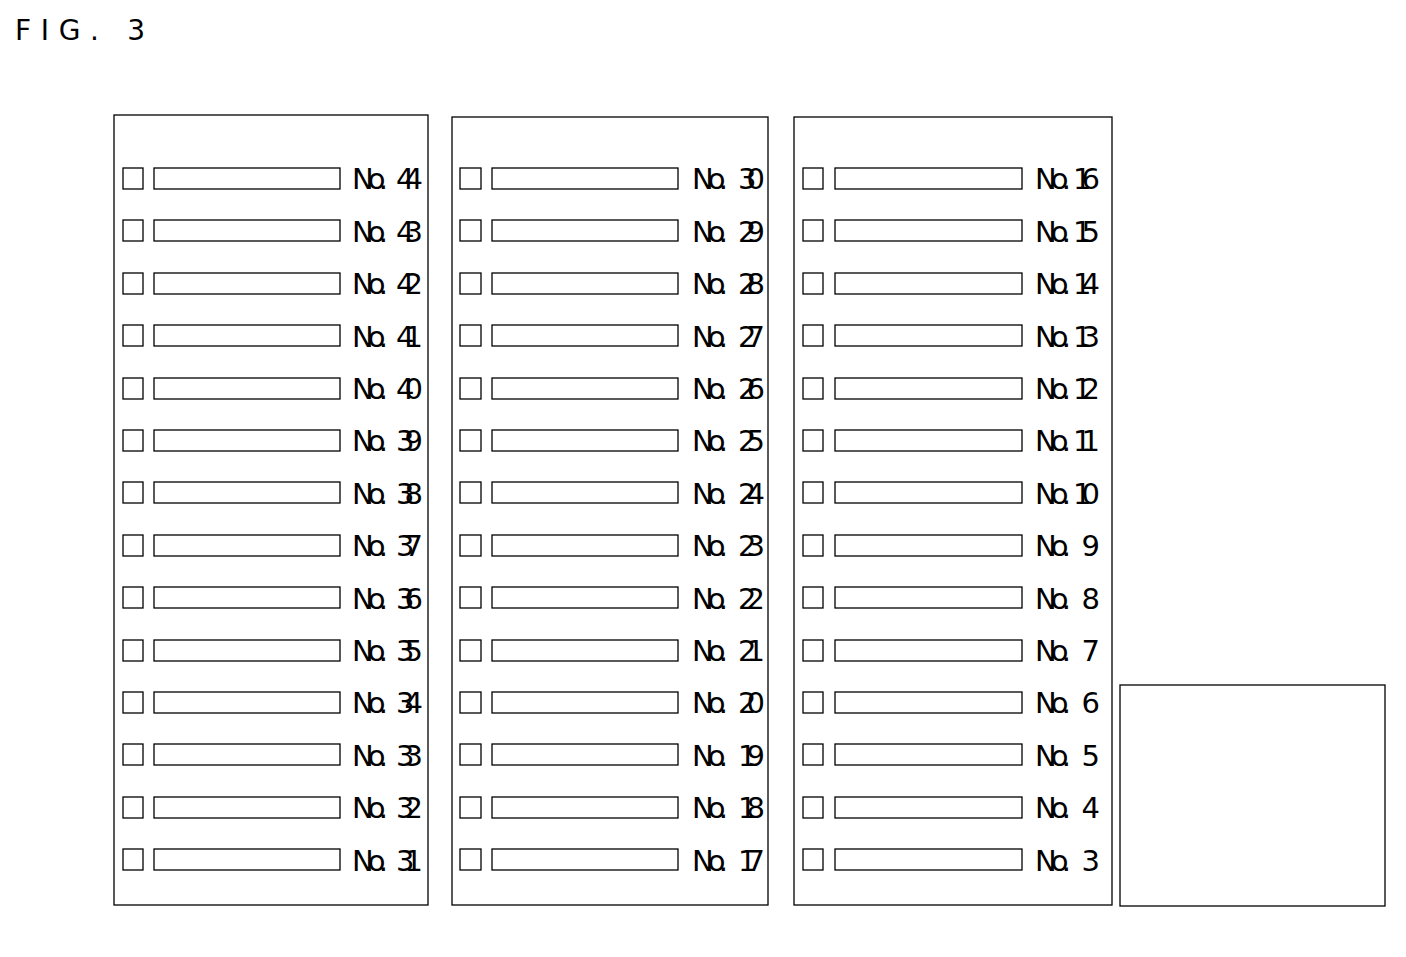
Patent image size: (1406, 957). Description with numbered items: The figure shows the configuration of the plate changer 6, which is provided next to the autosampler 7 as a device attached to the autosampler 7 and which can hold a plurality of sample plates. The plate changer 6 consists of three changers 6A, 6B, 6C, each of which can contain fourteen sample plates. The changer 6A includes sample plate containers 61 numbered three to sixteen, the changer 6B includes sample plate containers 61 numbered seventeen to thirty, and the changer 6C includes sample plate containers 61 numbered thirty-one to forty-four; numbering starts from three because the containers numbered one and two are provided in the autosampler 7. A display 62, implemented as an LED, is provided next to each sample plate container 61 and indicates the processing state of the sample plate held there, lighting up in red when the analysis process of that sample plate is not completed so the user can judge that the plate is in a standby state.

The plate changer 6 is at (1070, 117).
The changer 6A is at (948, 117).
The changer 6B is at (608, 117).
The changer 6C is at (255, 115).
The autosampler 7 is at (1192, 685).
The sample plate container 61 is at (183, 167).
The display 62 is at (123, 175).